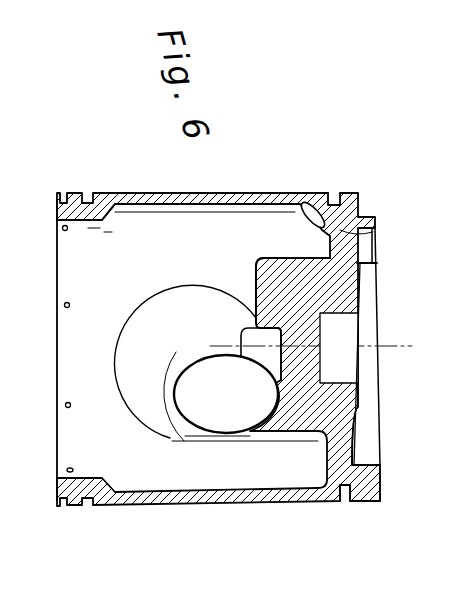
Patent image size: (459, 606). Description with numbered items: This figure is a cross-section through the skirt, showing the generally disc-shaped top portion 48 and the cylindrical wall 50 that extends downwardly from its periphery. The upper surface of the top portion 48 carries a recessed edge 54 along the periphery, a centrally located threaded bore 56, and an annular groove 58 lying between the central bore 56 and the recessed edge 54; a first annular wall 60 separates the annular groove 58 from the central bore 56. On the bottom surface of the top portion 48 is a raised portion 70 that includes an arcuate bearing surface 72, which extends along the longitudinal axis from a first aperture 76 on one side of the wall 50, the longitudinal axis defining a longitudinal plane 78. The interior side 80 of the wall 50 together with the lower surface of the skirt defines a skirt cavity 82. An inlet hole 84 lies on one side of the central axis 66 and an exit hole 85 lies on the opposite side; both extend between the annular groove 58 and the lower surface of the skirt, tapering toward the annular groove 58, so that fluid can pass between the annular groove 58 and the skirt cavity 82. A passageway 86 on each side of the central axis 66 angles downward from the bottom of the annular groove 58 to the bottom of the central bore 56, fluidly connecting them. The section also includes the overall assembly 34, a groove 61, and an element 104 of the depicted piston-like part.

The piston 34 is at (205, 516).
The top portion 48 is at (349, 501).
The cylindrical wall 50 is at (250, 193).
The recessed edge 54 is at (373, 492).
The threaded bore 56 is at (378, 328).
The annular groove 58 is at (378, 267).
The first annular wall 60 is at (363, 405).
The ring groove 61 is at (372, 480).
The central axis 66 is at (407, 348).
The raised portion 70 is at (292, 259).
The arcuate bearing surface 72 is at (241, 357).
The first aperture 76 is at (185, 440).
The longitudinal plane 78 is at (458, 30).
The interior side 80 is at (148, 205).
The skirt cavity 82 is at (98, 390).
The inlet hole 84 is at (306, 204).
The exit hole 85 is at (332, 503).
The passageway 86 is at (352, 428).
The pin 104 is at (446, 95).